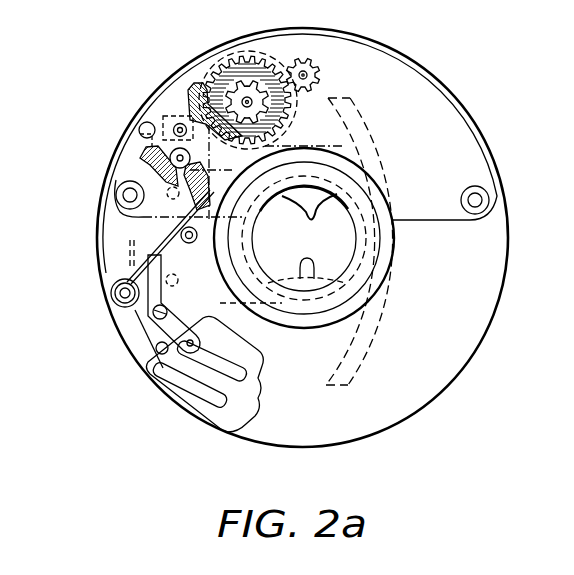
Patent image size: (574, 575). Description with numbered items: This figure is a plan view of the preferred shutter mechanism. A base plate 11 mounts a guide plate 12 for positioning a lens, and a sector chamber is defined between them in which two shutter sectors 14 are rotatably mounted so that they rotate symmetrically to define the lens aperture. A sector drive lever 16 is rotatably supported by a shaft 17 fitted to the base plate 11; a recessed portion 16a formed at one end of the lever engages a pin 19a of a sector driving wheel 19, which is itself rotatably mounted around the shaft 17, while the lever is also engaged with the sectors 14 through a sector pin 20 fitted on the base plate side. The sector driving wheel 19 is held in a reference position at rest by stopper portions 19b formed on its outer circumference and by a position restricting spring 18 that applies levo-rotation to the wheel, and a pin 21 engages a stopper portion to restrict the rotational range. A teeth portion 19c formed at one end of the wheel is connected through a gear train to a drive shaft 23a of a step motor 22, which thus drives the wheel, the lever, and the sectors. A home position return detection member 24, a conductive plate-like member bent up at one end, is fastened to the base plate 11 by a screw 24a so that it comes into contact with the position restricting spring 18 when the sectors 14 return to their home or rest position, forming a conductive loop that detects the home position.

The base plate 11 is at (398, 408).
The guide plate 12 is at (394, 274).
The shutter sectors 14 is at (366, 140).
The sector drive lever 16 is at (200, 200).
The recessed portion 16a is at (135, 128).
The shaft 17 is at (171, 155).
The position restricting spring 18 is at (151, 346).
The sector driving wheel 19 is at (150, 170).
The pin 19a is at (178, 110).
The stopper portions 19b is at (148, 124).
The teeth portion 19c is at (195, 86).
The sector pin 20 is at (189, 244).
The pin 21 is at (147, 123).
The step motor 22 is at (450, 130).
The drive shaft 23a is at (320, 76).
The home position return detection member 24 is at (153, 311).
The screw 24a is at (158, 318).